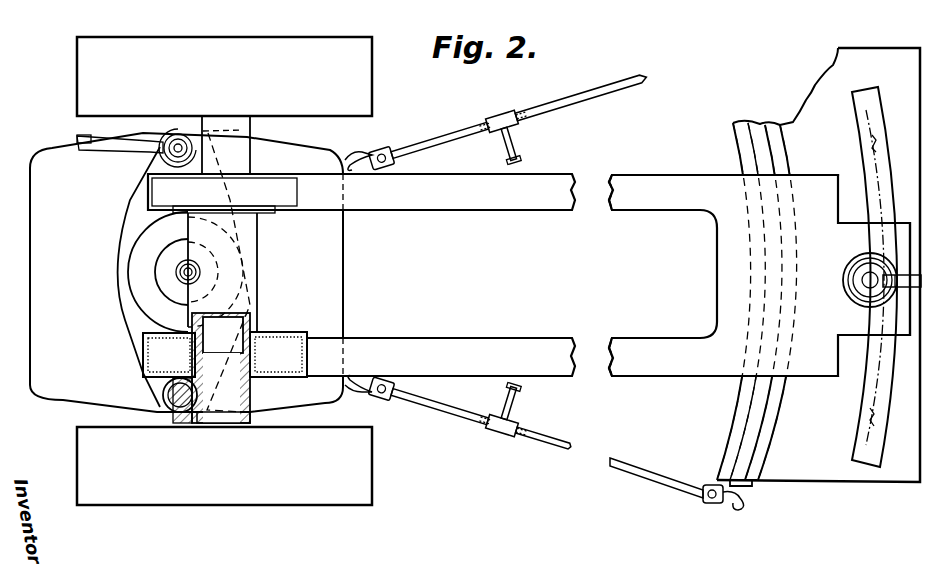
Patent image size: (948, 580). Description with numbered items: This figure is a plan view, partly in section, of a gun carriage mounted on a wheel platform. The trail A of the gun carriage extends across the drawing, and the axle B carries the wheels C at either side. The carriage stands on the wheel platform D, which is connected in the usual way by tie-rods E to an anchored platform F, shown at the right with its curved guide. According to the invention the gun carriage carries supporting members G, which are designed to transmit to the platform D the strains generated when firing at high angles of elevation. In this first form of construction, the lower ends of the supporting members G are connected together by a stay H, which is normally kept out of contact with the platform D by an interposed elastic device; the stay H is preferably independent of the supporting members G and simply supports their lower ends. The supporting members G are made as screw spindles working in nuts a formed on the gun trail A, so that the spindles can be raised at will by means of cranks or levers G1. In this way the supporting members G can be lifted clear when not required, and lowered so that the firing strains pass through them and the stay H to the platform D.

The trail A is at (150, 352).
The axle B is at (245, 129).
The wheels C is at (281, 45).
The wheel platform D is at (80, 388).
The tie-rods E is at (582, 102).
The anchored platform F is at (810, 468).
The supporting members G is at (172, 133).
The cranks or levers G1 is at (120, 150).
The stay H is at (135, 214).
The nuts a is at (182, 133).